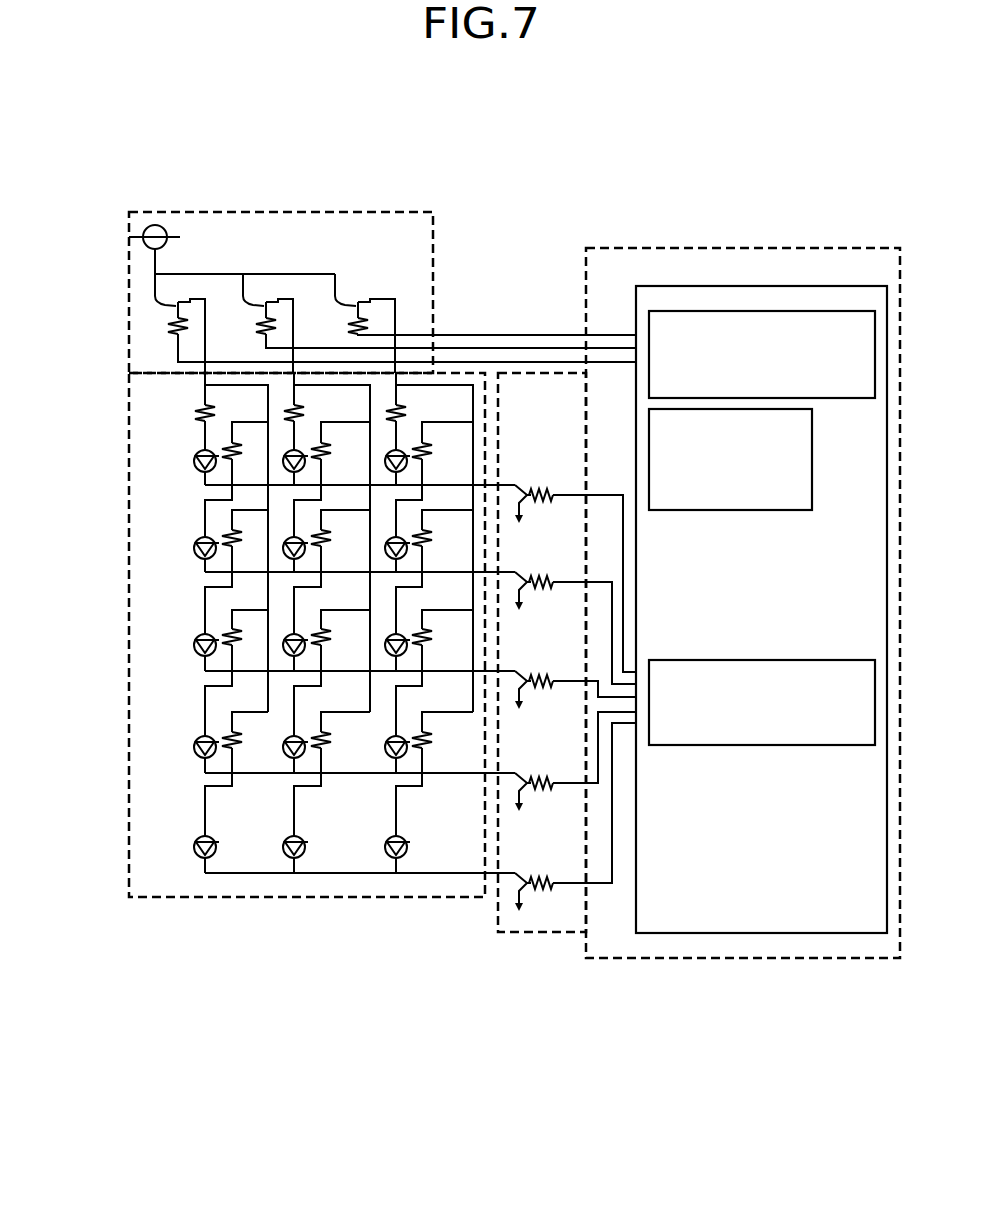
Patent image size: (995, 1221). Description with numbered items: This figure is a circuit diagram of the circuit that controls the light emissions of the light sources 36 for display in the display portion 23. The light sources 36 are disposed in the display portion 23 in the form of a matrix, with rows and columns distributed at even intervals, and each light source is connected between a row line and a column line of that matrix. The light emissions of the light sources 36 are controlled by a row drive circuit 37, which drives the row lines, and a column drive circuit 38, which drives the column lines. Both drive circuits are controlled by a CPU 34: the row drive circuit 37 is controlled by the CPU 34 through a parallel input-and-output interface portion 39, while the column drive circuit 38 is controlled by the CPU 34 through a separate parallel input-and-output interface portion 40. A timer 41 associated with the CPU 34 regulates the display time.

The display portion 23 is at (124, 745).
The CPU 34 is at (697, 248).
The light sources 36 is at (400, 456).
The row drive circuit 37 is at (367, 212).
The column drive circuit 38 is at (558, 933).
The parallel input-and-output interface portion 39 is at (785, 311).
The parallel input-and-output interface portion 40 is at (770, 745).
The timer 41 is at (752, 510).